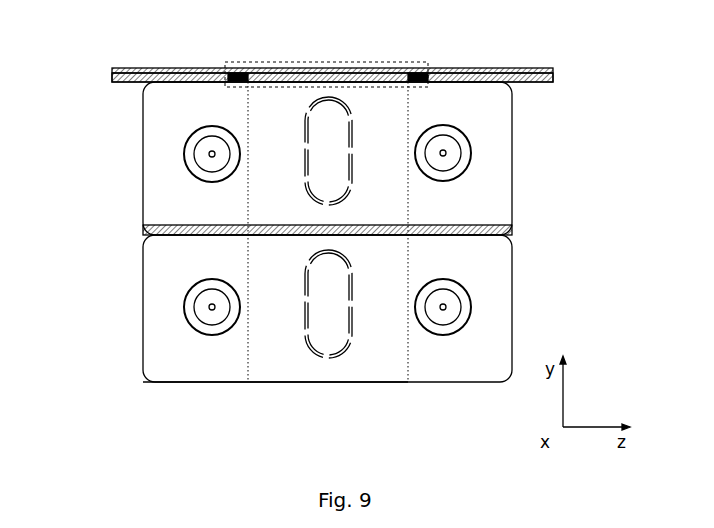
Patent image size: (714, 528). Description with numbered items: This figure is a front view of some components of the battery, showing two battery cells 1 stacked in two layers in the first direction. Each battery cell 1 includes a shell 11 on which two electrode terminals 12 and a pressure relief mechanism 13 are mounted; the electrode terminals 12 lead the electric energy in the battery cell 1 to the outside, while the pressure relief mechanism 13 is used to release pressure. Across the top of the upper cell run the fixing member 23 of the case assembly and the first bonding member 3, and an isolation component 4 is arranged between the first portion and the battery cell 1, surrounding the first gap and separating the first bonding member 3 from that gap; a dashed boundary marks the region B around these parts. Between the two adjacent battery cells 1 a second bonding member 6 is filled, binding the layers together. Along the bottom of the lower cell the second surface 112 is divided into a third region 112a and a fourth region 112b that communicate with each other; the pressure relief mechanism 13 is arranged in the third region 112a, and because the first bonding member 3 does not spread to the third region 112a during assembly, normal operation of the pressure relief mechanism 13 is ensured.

The battery cell 1 is at (302, 232).
The shell 11 is at (143, 204).
The electrode terminal 12 is at (184, 157).
The pressure relief mechanism 13 is at (305, 123).
The first bonding member 3 is at (178, 78).
The fixing member 23 is at (513, 75).
The isolation component 4 is at (428, 82).
The region B is at (348, 65).
The second bonding member 6 is at (505, 232).
The second surface 112 is at (275, 421).
The third region 112a is at (328, 400).
The fourth region 112b is at (210, 362).